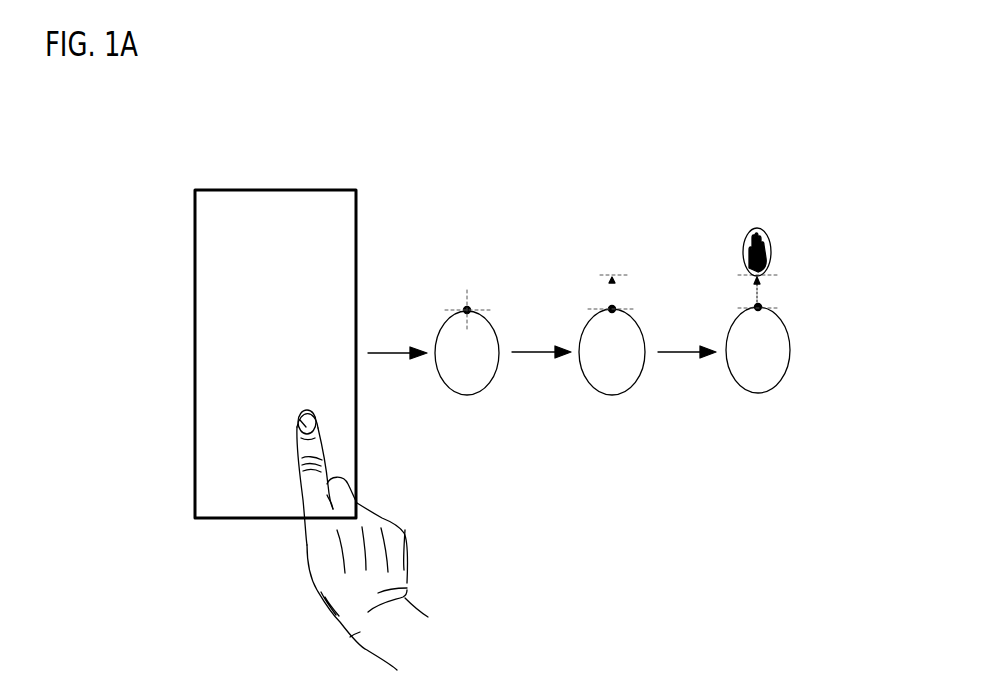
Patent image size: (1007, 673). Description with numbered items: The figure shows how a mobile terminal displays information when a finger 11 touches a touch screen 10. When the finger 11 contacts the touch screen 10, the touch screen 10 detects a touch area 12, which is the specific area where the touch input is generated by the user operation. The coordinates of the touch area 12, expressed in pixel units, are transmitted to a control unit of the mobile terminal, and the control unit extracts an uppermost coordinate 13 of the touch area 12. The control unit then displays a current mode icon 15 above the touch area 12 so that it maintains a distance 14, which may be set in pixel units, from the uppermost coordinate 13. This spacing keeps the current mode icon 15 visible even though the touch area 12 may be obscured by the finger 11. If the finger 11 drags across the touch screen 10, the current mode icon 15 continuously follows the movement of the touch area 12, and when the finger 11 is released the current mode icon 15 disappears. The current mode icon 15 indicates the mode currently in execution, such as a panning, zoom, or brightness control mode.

The touch screen 10 is at (277, 189).
The finger 11 is at (310, 490).
The touch area 12 is at (300, 420).
The uppermost coordinate 13 is at (464, 307).
The distance 14 is at (612, 292).
The current mode icon 15 is at (760, 228).